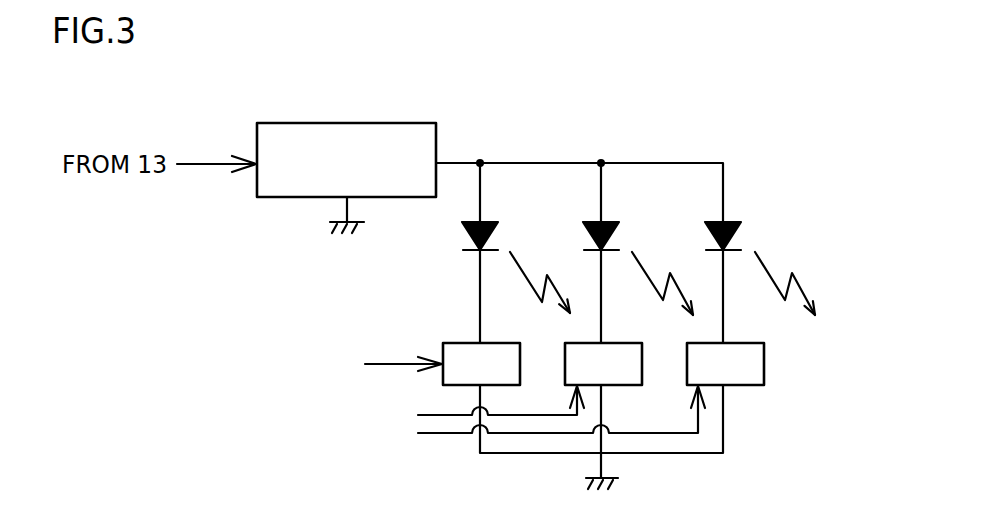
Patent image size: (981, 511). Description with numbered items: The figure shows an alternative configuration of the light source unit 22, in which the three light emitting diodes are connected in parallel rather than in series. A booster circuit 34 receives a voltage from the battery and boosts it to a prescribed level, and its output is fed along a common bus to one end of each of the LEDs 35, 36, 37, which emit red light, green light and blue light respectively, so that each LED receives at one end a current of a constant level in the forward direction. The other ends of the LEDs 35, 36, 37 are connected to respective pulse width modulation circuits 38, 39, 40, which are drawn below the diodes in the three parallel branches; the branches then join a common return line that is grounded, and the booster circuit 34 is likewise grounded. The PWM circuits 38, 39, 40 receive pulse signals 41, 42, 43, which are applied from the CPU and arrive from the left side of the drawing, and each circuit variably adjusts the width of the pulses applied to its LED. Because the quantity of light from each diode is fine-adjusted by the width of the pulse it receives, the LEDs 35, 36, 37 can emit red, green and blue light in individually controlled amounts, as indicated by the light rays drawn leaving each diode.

The light source unit 22 is at (735, 93).
The booster circuit 34 is at (405, 122).
The LED 35 is at (492, 220).
The LED 36 is at (611, 221).
The LED 37 is at (733, 221).
The pulse width modulation circuit 38 is at (505, 340).
The pulse width modulation circuit 39 is at (627, 340).
The pulse width modulation circuit 40 is at (748, 340).
The pulse signal 41 is at (387, 365).
The pulse signal 42 is at (484, 406).
The pulse signal 43 is at (545, 417).